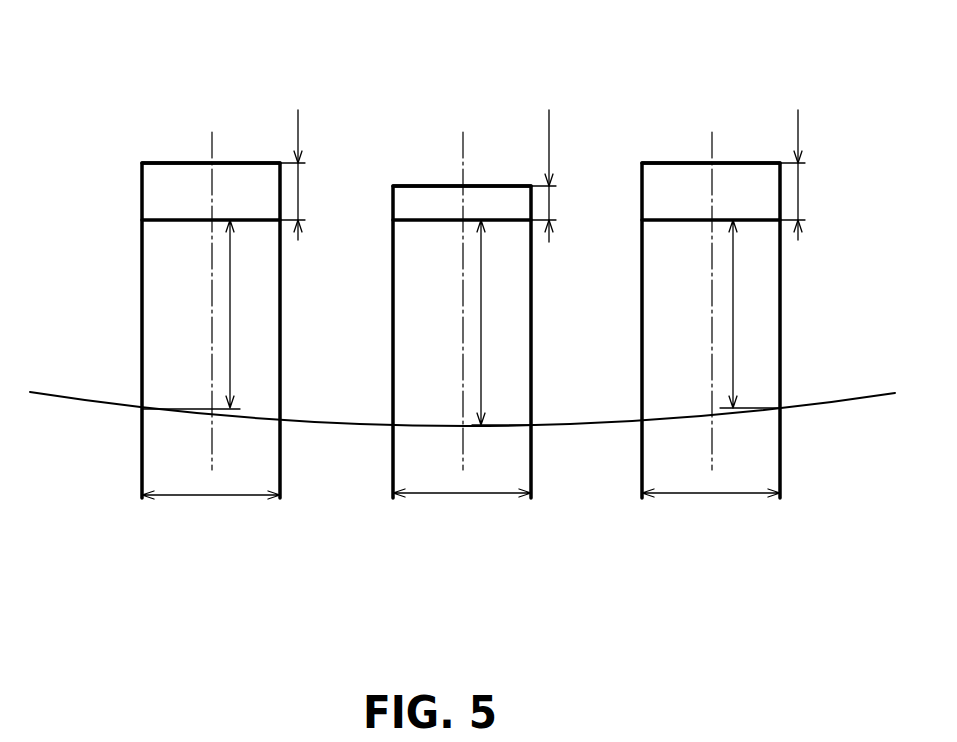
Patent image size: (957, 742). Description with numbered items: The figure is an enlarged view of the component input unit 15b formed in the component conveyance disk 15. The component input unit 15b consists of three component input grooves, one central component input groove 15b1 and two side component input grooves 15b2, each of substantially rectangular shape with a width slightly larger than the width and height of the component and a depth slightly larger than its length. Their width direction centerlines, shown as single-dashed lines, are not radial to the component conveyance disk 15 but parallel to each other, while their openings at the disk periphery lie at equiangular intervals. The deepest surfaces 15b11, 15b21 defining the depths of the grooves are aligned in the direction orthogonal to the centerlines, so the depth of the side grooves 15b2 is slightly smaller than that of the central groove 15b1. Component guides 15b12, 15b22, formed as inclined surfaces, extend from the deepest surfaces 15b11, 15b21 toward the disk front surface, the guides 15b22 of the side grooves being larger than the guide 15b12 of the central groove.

The component conveyance disk 15 is at (490, 49).
The component input unit 15b is at (625, 567).
The central component input groove 15b1 is at (408, 348).
The side component input groove 15b2 is at (158, 350).
The deepest surface of central component input groove 15b11 is at (417, 220).
The component guide of central component input groove 15b12 is at (432, 200).
The deepest surface of side component input groove 15b21 is at (170, 222).
The component guide of side component input groove 15b22 is at (178, 177).